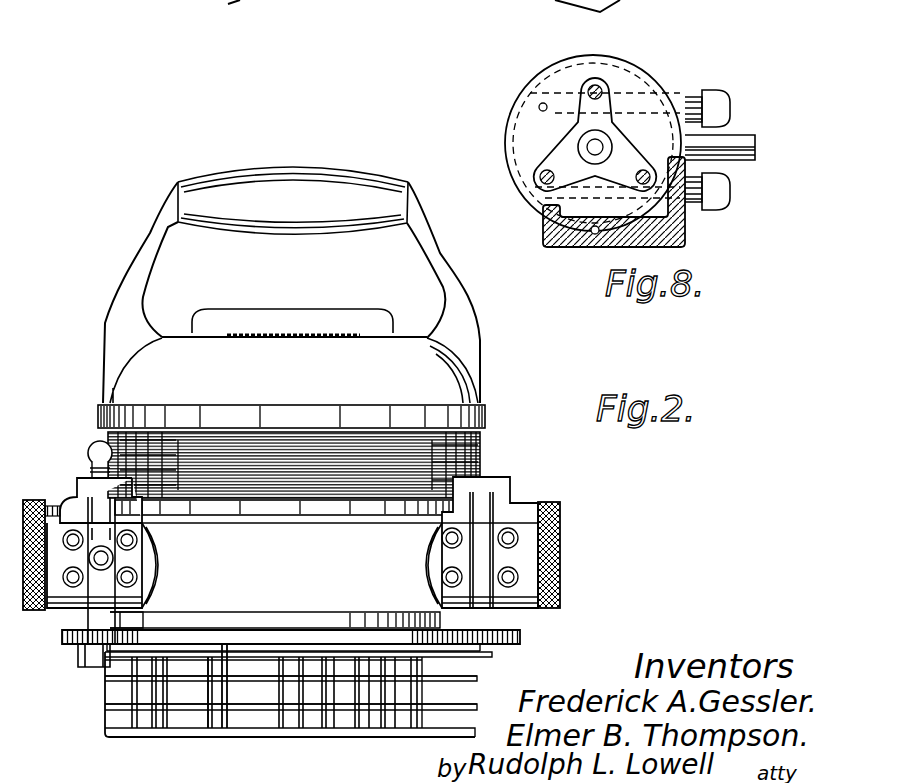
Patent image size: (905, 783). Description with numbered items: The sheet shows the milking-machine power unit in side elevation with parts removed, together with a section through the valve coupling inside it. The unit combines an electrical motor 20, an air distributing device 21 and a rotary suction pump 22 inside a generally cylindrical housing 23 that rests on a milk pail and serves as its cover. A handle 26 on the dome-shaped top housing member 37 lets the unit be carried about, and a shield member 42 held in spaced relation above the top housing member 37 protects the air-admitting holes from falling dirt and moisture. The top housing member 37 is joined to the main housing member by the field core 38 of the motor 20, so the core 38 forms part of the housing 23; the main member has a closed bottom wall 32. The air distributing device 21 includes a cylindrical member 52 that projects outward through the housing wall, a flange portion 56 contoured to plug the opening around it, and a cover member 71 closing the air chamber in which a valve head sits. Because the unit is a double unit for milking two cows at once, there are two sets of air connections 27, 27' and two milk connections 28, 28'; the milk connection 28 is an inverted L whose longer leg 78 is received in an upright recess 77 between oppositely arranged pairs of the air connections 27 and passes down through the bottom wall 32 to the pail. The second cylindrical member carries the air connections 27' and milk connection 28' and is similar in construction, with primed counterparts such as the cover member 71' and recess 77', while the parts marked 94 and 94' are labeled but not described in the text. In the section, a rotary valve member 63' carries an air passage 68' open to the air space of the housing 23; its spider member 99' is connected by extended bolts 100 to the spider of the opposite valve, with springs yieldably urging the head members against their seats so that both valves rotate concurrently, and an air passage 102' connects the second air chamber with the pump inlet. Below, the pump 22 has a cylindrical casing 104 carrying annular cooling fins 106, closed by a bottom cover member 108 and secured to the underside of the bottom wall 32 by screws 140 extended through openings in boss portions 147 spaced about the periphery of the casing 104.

In FIG. 2, the electrical motor 20 is at (493, 453).
In FIG. 2, the air distributing device 21 is at (571, 563).
In FIG. 2, the rotary suction pump 22 is at (91, 713).
In FIG. 2, the housing 23 is at (87, 422).
In FIG. 2, the handle 26 is at (363, 186).
In FIG. 2, the air connections 27 is at (127, 558).
In FIG. 2, the air connections 27' is at (445, 560).
In FIG. 8, the air connections 27' is at (726, 133).
In FIG. 2, the milk connection 28 is at (74, 663).
In FIG. 8, the milk connection 28' is at (730, 130).
In FIG. 2, the bottom wall 32 is at (531, 638).
In FIG. 2, the top housing member 37 is at (470, 388).
In FIG. 2, the field core 38 is at (485, 463).
In FIG. 2, the shield member 42 is at (334, 318).
In FIG. 2, the cylindrical member 52 is at (60, 508).
In FIG. 2, the flange portion 56 is at (160, 566).
In FIG. 8, the rotary valve member 63' is at (593, 143).
In FIG. 8, the air passage 68' is at (597, 134).
In FIG. 2, the cover member 71 is at (34, 574).
In FIG. 2, the knurled knob 71' is at (569, 555).
In FIG. 2, the upright recess 77 is at (120, 599).
In FIG. 2, the rod 77' is at (492, 541).
In FIG. 2, the longer leg 78 is at (118, 619).
In FIG. 2, the shaft 94 is at (81, 571).
In FIG. 8, the shaft 94' is at (737, 155).
In FIG. 8, the spider member 99' is at (649, 83).
In FIG. 8, the extended bolts 100 is at (600, 90).
In FIG. 8, the air passage 102' is at (614, 216).
In FIG. 2, the cylindrical casing 104 is at (455, 684).
In FIG. 2, the annular cooling fins 106 is at (479, 709).
In FIG. 2, the bottom cover member 108 is at (340, 735).
In FIG. 2, the screws 140 is at (440, 662).
In FIG. 2, the boss portions 147 is at (220, 730).